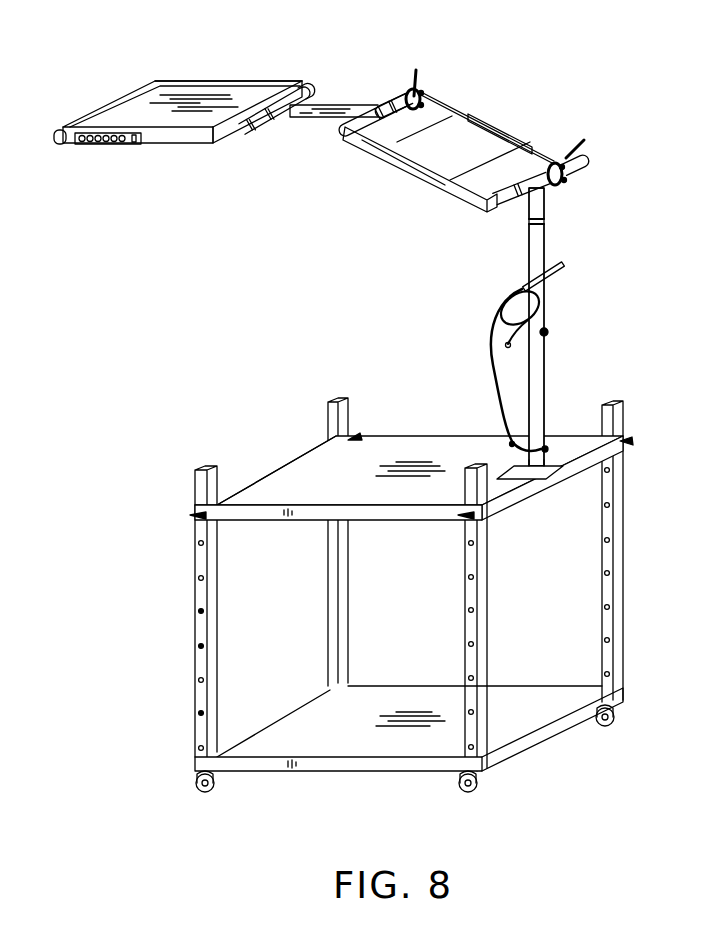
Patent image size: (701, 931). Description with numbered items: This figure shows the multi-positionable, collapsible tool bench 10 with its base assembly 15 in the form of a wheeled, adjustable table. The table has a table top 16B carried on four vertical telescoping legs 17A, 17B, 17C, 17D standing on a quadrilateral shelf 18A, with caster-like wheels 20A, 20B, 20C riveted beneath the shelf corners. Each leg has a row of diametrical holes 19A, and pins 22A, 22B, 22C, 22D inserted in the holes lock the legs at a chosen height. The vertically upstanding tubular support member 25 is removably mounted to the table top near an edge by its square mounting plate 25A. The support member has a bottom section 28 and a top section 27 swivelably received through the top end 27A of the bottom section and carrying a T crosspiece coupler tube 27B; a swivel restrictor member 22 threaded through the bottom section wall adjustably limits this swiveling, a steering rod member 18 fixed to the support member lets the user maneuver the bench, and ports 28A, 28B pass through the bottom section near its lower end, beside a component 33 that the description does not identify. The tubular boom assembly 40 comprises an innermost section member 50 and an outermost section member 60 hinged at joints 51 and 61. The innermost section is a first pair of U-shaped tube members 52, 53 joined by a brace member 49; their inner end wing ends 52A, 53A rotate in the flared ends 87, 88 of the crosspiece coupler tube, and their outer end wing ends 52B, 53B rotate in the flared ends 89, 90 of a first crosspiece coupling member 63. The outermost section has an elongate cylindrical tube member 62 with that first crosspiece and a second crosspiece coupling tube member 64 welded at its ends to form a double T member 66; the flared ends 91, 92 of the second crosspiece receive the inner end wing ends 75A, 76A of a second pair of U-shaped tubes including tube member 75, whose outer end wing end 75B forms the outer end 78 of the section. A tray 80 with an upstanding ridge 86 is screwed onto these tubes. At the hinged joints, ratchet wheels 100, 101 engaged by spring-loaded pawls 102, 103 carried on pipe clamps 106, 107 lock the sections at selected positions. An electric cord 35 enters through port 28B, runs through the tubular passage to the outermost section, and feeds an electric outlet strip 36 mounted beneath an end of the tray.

The tool bench 10 is at (158, 147).
The base assembly 15 is at (396, 613).
The table top 16B is at (290, 462).
The adjustable telescoping leg 17A is at (465, 485).
The adjustable telescoping leg 17B is at (623, 415).
The adjustable telescoping leg 17C is at (162, 611).
The adjustable telescoping leg 17D is at (327, 423).
The steering rod member 18 is at (565, 265).
The quadrilateral shelf 18A is at (324, 758).
The diametrical holes 19A is at (200, 713).
The caster-like wheel 20A is at (478, 788).
The caster-like wheel 20B is at (613, 730).
The caster-like wheel 20C is at (193, 792).
The swivel restrictor member 22 is at (550, 328).
The pin 22A is at (463, 518).
The pin 22B is at (630, 442).
The pin 22C is at (190, 517).
The pin 22D is at (357, 433).
The tubular support member 25 is at (535, 354).
The mounting plate 25A is at (550, 478).
The top section 27 is at (544, 207).
The top end of the bottom section 27A is at (530, 247).
The T crosspiece coupler tube 27B is at (562, 190).
The bottom section 28 is at (545, 377).
The port 28A is at (549, 436).
The port 28B is at (507, 427).
The column base attachment 33 is at (548, 447).
The electric cord 35 is at (497, 348).
The electric outlet strip 36 is at (110, 148).
The tubular boom assembly 40 is at (319, 156).
The brace member 49 is at (472, 114).
The innermost section member 50 is at (479, 129).
The hinged joint 51 is at (528, 220).
The U-shaped tube member 52 is at (408, 174).
The inner end wing end 52A is at (498, 208).
The outer end wing end 52B is at (342, 133).
The U-shaped tube member 53 is at (530, 137).
The inner end wing end 53A is at (565, 168).
The outer end wing end 53B is at (418, 99).
The outermost section member 60 is at (319, 110).
The hinged joint 61 is at (383, 128).
The cylindrical tube member 62 is at (308, 122).
The first crosspiece coupling member 63 is at (395, 107).
The second crosspiece coupling tube member 64 is at (263, 127).
The double T member 66 is at (358, 100).
The U-shaped tube member 75 is at (183, 148).
The inner end wing end 75A is at (221, 143).
The outer end wing end 75B is at (62, 142).
The inner end wing end 76A is at (300, 99).
The outer end 78 is at (158, 114).
The tray 80 is at (137, 107).
The upstanding ridge 86 is at (185, 80).
The flared end 87 is at (514, 183).
The flared end 88 is at (547, 175).
The flared end 89 is at (386, 128).
The flared end 90 is at (410, 88).
The flared end 91 is at (250, 132).
The flared end 92 is at (299, 86).
The ratchet wheel 100 is at (563, 183).
The ratchet wheel 101 is at (423, 98).
The spring-loaded pawl 102 is at (584, 141).
The spring-loaded pawl 103 is at (417, 70).
The pipe clamp 106 is at (567, 178).
The pipe clamp 107 is at (433, 88).